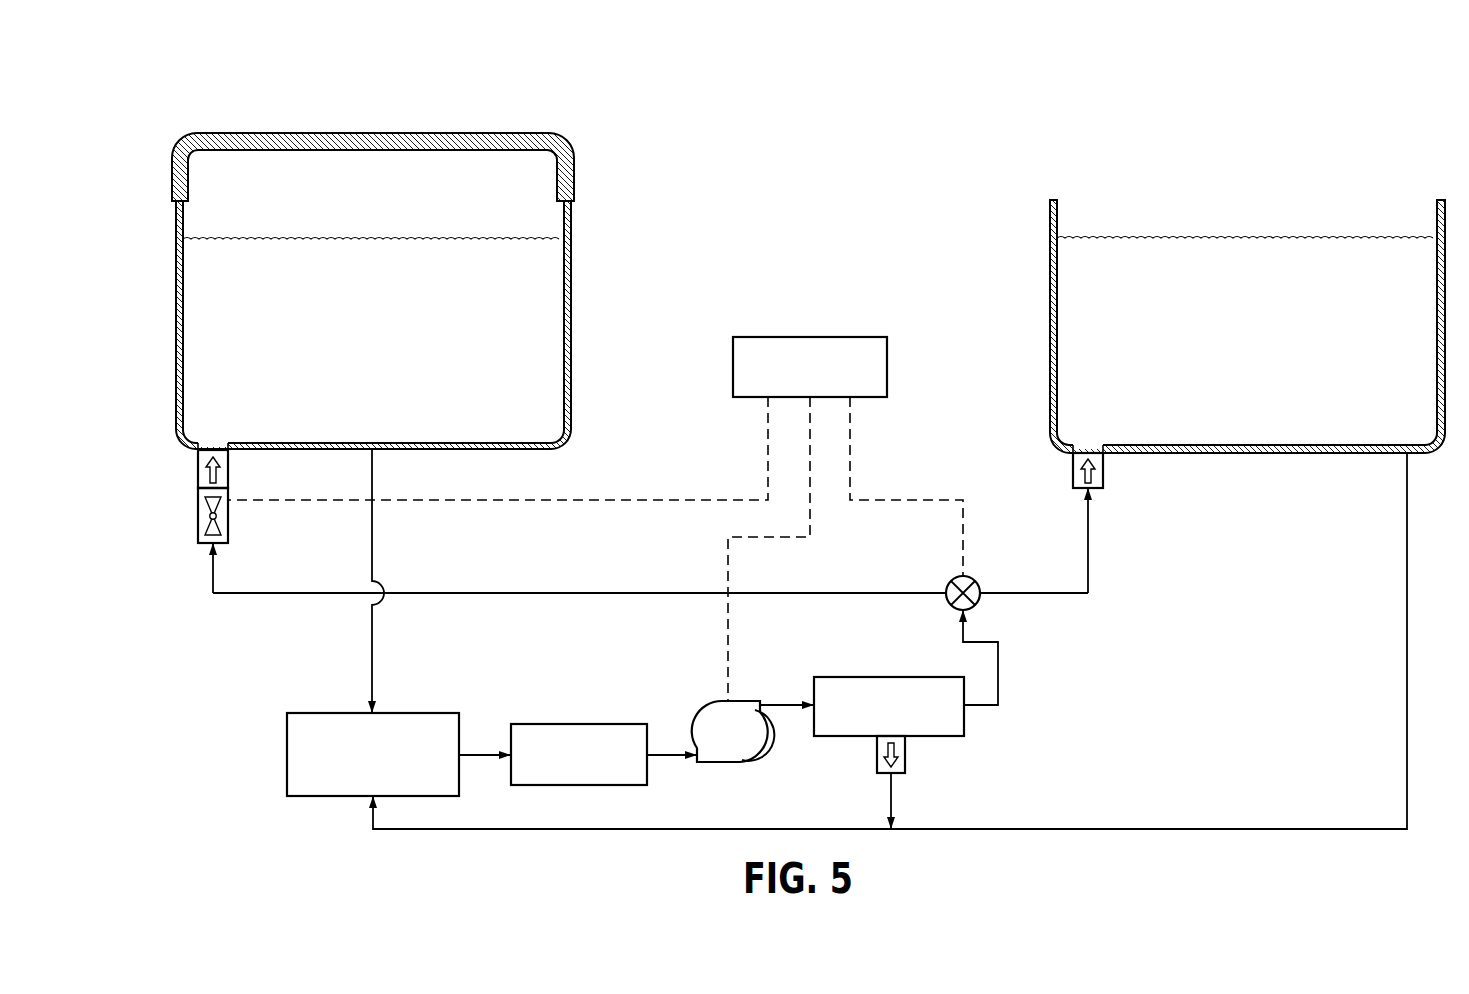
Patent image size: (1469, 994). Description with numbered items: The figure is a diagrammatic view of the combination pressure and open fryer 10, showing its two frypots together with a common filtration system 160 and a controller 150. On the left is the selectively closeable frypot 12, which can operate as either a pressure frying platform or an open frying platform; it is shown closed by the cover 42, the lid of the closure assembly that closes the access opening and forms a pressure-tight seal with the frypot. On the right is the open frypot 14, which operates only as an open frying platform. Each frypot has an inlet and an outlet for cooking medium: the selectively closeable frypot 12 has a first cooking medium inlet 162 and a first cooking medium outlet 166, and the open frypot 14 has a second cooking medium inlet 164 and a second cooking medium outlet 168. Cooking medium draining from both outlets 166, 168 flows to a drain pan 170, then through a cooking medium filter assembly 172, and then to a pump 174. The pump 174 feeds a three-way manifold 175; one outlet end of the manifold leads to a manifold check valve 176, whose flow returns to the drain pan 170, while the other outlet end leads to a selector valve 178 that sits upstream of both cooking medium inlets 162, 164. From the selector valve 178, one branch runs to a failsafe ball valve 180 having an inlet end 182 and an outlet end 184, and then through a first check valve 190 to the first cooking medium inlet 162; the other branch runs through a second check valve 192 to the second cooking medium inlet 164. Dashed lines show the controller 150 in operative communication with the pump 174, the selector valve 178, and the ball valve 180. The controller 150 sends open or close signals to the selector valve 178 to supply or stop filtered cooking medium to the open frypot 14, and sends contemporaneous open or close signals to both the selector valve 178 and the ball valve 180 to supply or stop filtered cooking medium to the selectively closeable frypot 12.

The combination pressure and open fryer 10 is at (127, 140).
The selectively closeable frypot 12 is at (176, 271).
The open frypot 14 is at (1050, 268).
The cover 42 is at (373, 133).
The controller 150 is at (860, 337).
The common filtration system 160 is at (983, 577).
The first cooking medium inlet 162 is at (214, 444).
The second cooking medium inlet 164 is at (1087, 445).
The first cooking medium outlet 166 is at (372, 440).
The second cooking medium outlet 168 is at (1407, 445).
The drain pan 170 is at (287, 730).
The cooking medium filter assembly 172 is at (530, 724).
The pump 174 is at (700, 722).
The 3-way manifold 175 is at (845, 677).
The manifold check valve 176 is at (877, 757).
The selector valve 178 is at (958, 576).
The ball valve 180 is at (198, 514).
The inlet end 182 is at (206, 546).
The outlet end 184 is at (228, 487).
The first check valve 190 is at (198, 471).
The second check valve 192 is at (1073, 470).